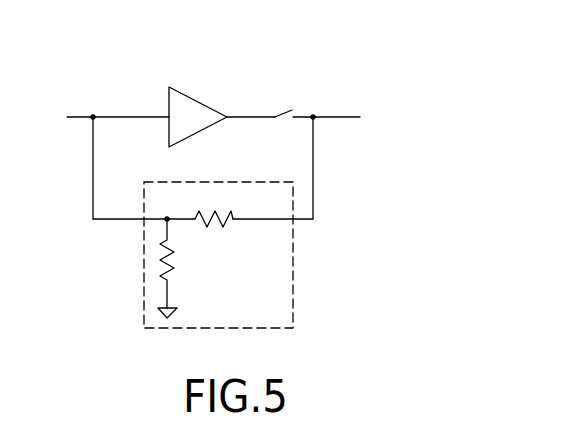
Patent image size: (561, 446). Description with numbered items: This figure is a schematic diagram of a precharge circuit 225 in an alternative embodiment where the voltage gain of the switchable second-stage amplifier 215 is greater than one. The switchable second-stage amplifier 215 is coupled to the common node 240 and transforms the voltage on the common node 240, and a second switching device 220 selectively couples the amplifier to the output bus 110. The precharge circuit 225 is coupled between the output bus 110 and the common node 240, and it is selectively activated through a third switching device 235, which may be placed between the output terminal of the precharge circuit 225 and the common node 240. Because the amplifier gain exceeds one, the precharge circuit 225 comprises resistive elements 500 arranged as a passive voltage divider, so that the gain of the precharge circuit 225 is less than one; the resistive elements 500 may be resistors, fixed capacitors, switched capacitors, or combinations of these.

The common node 240 is at (93, 116).
The switchable second-stage amplifier 215 is at (193, 91).
The second switching device 220 is at (284, 112).
The output bus 110 is at (358, 120).
The third switching device 235 is at (141, 212).
The precharge circuit 225 is at (293, 250).
The resistive elements 500 is at (218, 227).